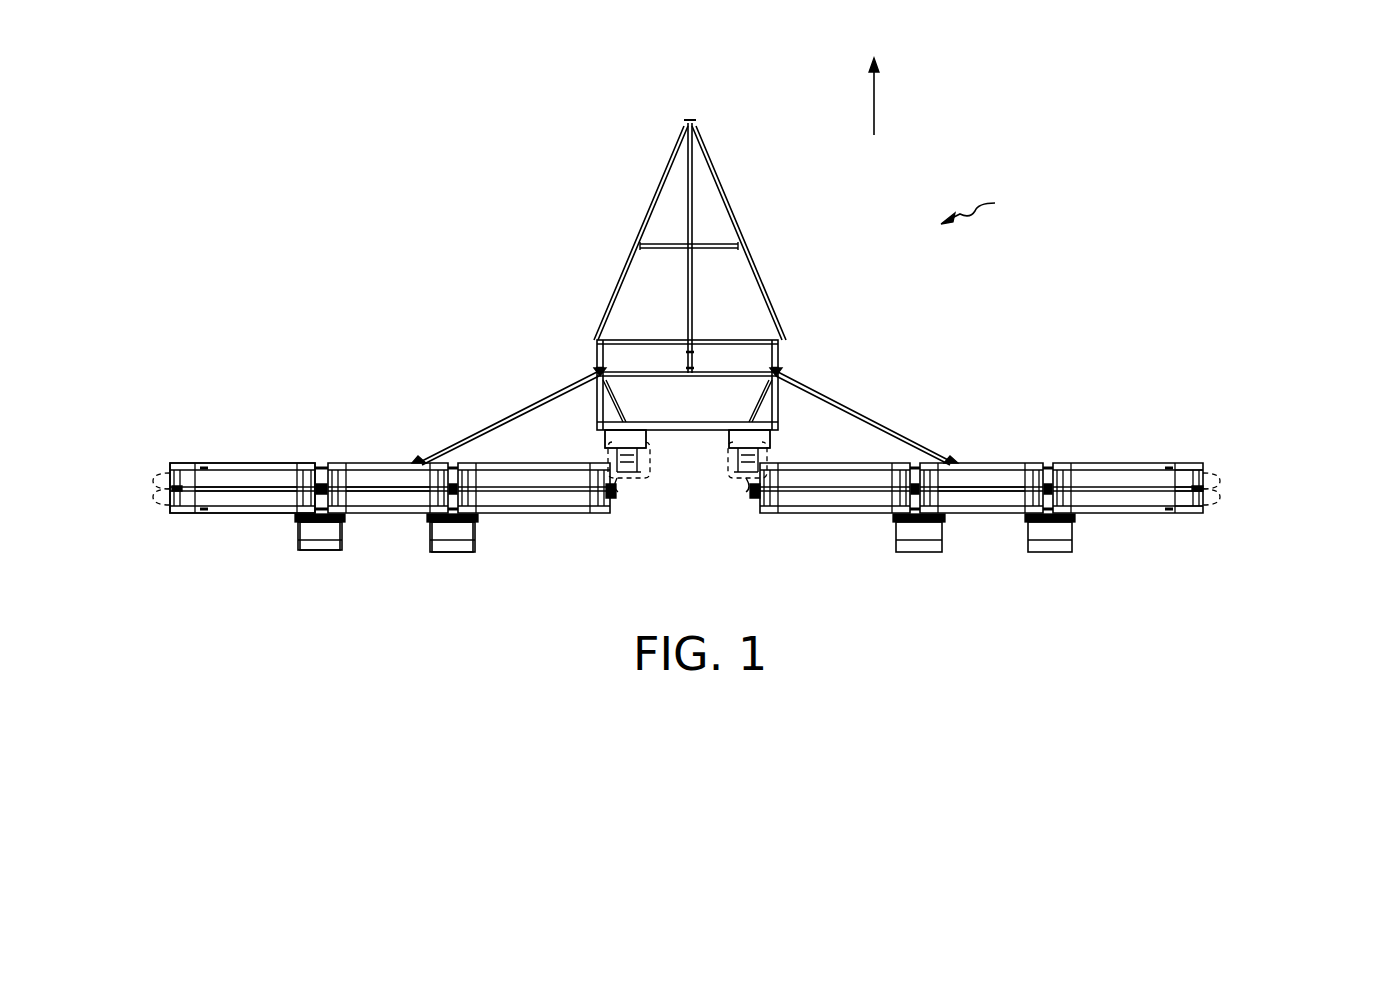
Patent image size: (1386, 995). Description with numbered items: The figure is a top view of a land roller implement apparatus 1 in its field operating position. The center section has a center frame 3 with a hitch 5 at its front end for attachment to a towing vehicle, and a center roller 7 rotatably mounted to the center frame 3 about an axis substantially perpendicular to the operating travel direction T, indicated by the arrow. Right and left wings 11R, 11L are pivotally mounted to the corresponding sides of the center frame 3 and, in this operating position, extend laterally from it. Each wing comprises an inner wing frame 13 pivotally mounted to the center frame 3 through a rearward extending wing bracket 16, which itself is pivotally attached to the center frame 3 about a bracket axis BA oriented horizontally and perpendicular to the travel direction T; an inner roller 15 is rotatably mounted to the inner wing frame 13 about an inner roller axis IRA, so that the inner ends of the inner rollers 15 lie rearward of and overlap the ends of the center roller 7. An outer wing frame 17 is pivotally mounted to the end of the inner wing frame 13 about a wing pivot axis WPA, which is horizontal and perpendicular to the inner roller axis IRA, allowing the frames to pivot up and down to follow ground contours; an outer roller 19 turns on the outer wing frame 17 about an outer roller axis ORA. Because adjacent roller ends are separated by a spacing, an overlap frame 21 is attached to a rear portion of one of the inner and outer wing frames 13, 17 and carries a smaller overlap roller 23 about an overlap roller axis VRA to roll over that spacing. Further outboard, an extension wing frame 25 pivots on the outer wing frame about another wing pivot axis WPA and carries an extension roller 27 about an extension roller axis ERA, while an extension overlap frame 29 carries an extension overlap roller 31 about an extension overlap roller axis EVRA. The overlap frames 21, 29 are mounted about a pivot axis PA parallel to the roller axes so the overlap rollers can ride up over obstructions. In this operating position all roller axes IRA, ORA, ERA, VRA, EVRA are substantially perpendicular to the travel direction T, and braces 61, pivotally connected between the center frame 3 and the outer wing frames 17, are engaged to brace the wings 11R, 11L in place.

The land roller implement apparatus 1 is at (976, 206).
The center frame 3 is at (597, 355).
The hitch 5 is at (694, 122).
The center roller 7 is at (688, 404).
The left wing 11L is at (180, 515).
The right wing 11R is at (1187, 463).
The inner wing frame 13 is at (543, 463).
The inner roller 15 is at (560, 500).
The wing bracket 16 is at (738, 488).
The outer wing frame 17 is at (393, 463).
The outer roller 19 is at (393, 497).
The overlap frame 21 is at (480, 528).
The overlap roller 23 is at (447, 553).
The extension wing frame 25 is at (253, 463).
The extension roller 27 is at (260, 497).
The extension overlap frame 29 is at (292, 528).
The extension overlap roller 31 is at (313, 552).
The brace 61 is at (833, 395).
The bracket axis BA is at (775, 437).
The overlap roller axis VRA is at (890, 539).
The extension overlap roller axis EVRA is at (1078, 539).
The pivot axis PA is at (1000, 523).
The wing pivot axis WPA is at (1050, 463).
The inner roller axis IRA is at (1249, 456).
The outer roller axis ORA is at (1223, 490).
The extension roller axis ERA is at (1252, 523).
The operating travel direction T is at (887, 96).